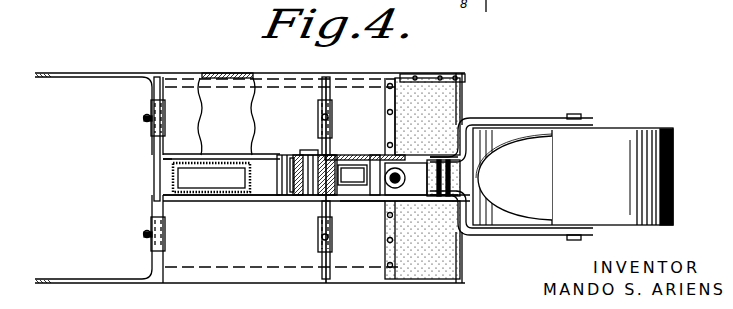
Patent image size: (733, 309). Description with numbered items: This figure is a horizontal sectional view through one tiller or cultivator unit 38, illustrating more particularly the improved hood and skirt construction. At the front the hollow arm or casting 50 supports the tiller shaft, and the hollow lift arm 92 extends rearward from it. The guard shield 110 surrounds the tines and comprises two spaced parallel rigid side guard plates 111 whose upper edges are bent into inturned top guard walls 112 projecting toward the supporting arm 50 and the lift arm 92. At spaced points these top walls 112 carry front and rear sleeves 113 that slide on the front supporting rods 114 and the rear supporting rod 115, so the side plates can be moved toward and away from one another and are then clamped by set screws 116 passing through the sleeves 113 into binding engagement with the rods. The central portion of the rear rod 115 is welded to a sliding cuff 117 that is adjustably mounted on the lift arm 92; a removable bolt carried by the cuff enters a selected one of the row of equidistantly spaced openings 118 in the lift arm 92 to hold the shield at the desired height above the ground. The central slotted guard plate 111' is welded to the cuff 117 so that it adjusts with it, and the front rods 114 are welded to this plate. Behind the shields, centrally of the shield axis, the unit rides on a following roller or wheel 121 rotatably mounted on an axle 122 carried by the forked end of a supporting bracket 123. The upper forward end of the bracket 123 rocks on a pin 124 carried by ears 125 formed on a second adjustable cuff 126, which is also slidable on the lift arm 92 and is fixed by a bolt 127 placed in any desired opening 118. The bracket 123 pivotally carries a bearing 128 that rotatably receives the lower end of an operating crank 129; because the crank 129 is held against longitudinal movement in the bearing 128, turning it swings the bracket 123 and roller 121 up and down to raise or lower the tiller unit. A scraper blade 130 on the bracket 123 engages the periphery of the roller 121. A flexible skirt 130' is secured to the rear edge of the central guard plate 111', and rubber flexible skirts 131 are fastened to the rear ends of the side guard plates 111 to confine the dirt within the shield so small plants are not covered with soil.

The tiller or cultivator unit 38 is at (430, 54).
The hollow arm or casting 50 is at (173, 181).
The lift arm 92 is at (299, 197).
The guard shield 110 is at (145, 130).
The side guard plate 111 is at (250, 171).
The central slotted guard plate 111' is at (282, 154).
The top guard wall 112 is at (277, 97).
The sleeve 113 is at (151, 110).
The front supporting rod 114 is at (152, 163).
The rear supporting rod 115 is at (339, 80).
The set screw 116 is at (152, 117).
The sliding cuff 117 is at (282, 197).
The opening 118 is at (336, 152).
The following roller or wheel 121 is at (573, 176).
The axle 122 is at (573, 241).
The supporting bracket 123 is at (455, 246).
The pin 124 is at (352, 203).
The ear 125 is at (404, 158).
The second adjustable cuff 126 is at (290, 197).
The bolt 127 is at (314, 197).
The bearing 128 is at (422, 240).
The operating crank 129 is at (405, 178).
The scraper blade 130 is at (514, 177).
The flexible skirt 130' is at (511, 162).
The flexible skirt 131 is at (448, 120).